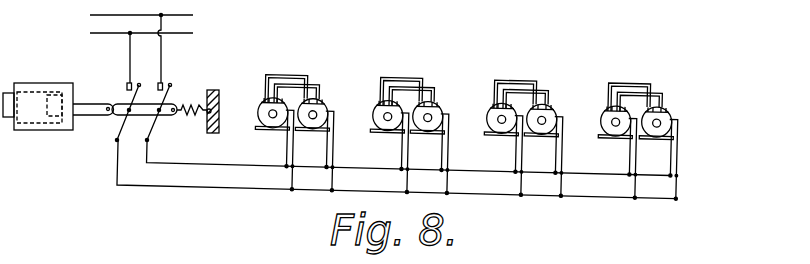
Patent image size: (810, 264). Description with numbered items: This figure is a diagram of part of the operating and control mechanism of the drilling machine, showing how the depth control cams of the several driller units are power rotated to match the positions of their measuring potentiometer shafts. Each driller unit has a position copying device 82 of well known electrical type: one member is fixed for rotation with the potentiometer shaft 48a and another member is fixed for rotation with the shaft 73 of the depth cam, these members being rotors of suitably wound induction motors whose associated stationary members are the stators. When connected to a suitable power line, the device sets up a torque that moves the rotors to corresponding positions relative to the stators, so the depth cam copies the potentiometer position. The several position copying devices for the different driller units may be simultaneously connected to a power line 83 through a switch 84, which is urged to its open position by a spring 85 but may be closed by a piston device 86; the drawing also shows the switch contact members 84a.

The power line 83 is at (191, 24).
The switch 84 is at (168, 78).
The contact members 84a is at (121, 128).
The spring 85 is at (197, 118).
The piston device 86 is at (37, 83).
The position copying device 82 is at (440, 66).
The measuring potentiometer shaft 48a is at (385, 114).
The shaft of the depth cam 73 is at (430, 116).